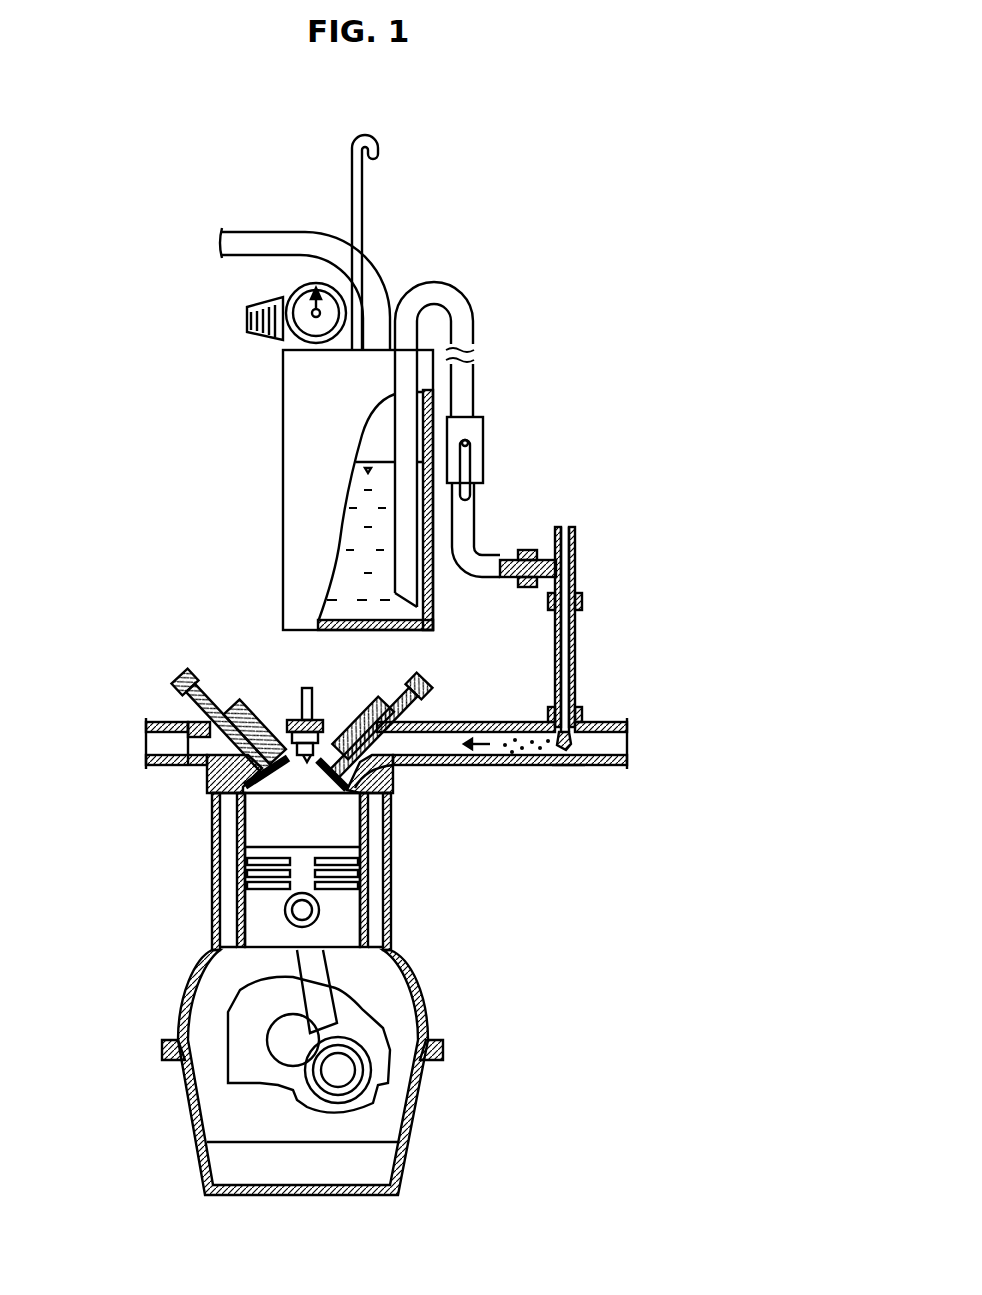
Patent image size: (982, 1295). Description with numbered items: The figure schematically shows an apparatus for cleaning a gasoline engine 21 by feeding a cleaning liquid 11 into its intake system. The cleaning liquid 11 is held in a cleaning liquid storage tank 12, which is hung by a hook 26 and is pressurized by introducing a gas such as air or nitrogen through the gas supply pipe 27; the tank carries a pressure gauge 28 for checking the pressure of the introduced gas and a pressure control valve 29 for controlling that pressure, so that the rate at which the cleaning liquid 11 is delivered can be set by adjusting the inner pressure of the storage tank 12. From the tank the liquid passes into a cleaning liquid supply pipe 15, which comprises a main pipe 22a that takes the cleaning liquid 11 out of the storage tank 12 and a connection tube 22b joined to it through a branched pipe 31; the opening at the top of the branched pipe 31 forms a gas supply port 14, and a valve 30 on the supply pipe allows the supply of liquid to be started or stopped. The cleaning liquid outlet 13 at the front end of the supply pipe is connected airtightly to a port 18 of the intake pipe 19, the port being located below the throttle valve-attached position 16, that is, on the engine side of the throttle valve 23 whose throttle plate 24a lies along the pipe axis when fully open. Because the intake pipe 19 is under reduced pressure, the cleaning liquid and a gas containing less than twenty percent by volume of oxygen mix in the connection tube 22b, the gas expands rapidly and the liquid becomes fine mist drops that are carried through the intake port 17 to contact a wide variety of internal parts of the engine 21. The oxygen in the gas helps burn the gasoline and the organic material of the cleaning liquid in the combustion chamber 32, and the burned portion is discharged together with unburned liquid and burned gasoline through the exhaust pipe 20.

The cleaning liquid 11 is at (352, 538).
The cleaning liquid storage tank 12 is at (290, 460).
The cleaning liquid outlet 13 is at (575, 700).
The gas supply port 14 is at (563, 526).
The cleaning liquid supply pipe 15 is at (496, 516).
The throttle valve-attached position 16 is at (575, 745).
The intake port 17 is at (417, 770).
The port 18 is at (533, 728).
The intake pipe 19 is at (497, 766).
The exhaust pipe 20 is at (163, 766).
The gasoline engine 21 is at (399, 921).
The main pipe 22a is at (465, 291).
The connection tube 22b is at (577, 636).
The throttle valve 23 is at (560, 766).
The throttle plate 24a is at (572, 766).
The hook 26 is at (345, 138).
The gas supply pipe 27 is at (260, 236).
The pressure gauge 28 is at (288, 290).
The pressure control valve 29 is at (246, 322).
The valve 30 is at (484, 430).
The branched pipe 31 is at (576, 558).
The combustion chamber 32 is at (297, 773).